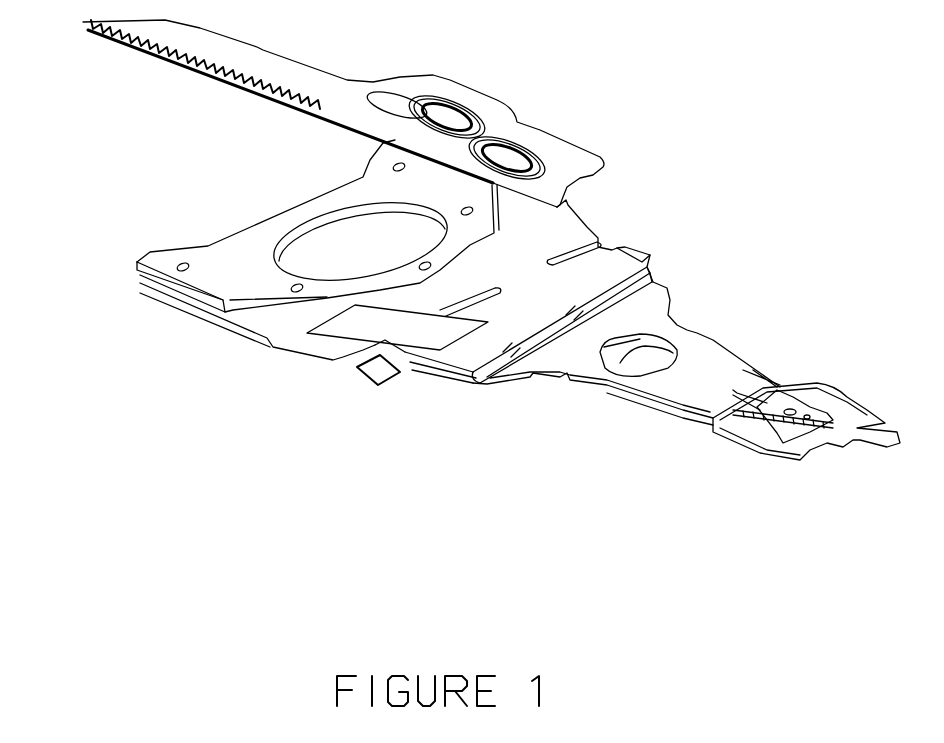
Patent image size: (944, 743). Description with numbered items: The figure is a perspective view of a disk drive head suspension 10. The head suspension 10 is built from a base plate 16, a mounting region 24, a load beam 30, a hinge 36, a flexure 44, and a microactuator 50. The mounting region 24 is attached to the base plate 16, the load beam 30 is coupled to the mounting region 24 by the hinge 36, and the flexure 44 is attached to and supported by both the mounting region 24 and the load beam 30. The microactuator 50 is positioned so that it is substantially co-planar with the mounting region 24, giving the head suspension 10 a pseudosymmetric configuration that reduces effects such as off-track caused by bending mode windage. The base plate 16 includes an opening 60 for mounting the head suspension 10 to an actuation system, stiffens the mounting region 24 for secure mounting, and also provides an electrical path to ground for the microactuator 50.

The head suspension 10 is at (97, 178).
The base plate 16 is at (220, 288).
The mounting region 24 is at (581, 212).
The load beam 30 is at (548, 385).
The hinge 36 is at (455, 388).
The flexure 44 is at (683, 413).
The microactuator 50 is at (378, 333).
The opening 60 is at (332, 240).